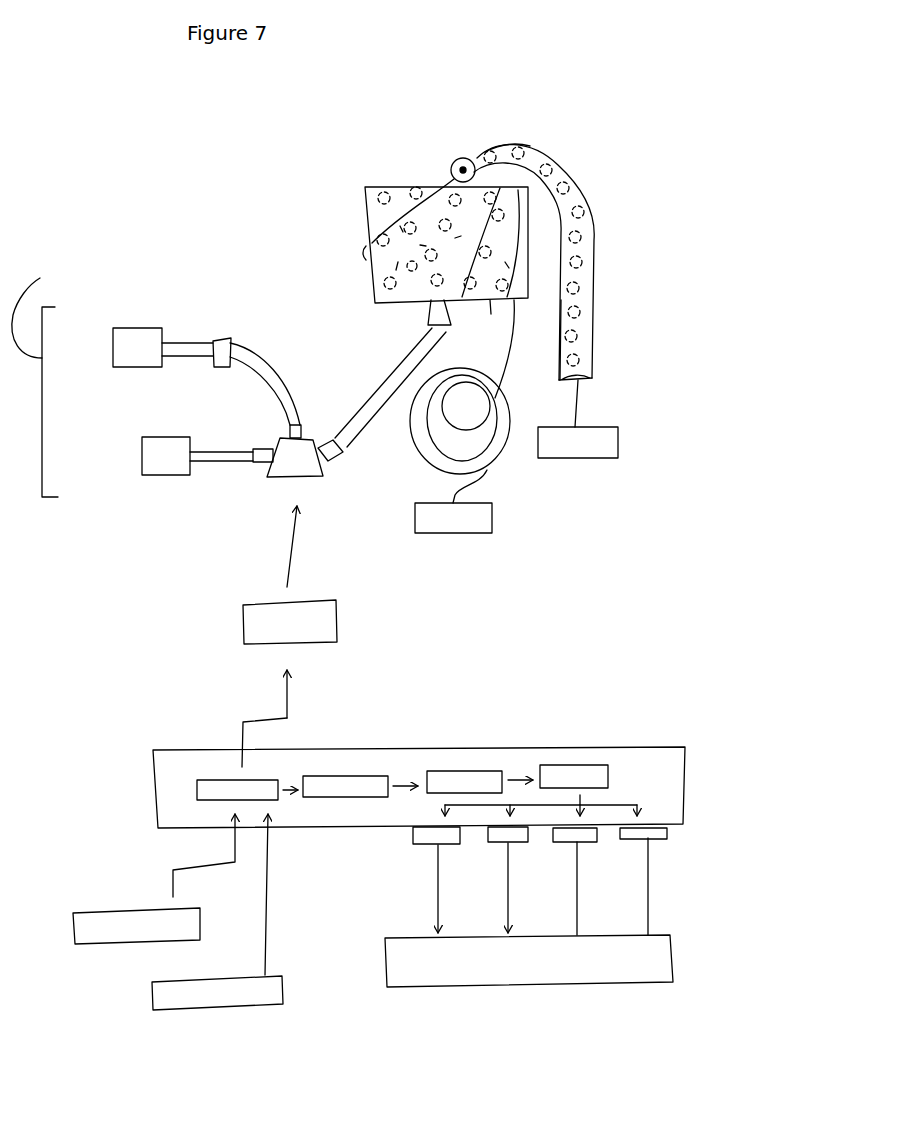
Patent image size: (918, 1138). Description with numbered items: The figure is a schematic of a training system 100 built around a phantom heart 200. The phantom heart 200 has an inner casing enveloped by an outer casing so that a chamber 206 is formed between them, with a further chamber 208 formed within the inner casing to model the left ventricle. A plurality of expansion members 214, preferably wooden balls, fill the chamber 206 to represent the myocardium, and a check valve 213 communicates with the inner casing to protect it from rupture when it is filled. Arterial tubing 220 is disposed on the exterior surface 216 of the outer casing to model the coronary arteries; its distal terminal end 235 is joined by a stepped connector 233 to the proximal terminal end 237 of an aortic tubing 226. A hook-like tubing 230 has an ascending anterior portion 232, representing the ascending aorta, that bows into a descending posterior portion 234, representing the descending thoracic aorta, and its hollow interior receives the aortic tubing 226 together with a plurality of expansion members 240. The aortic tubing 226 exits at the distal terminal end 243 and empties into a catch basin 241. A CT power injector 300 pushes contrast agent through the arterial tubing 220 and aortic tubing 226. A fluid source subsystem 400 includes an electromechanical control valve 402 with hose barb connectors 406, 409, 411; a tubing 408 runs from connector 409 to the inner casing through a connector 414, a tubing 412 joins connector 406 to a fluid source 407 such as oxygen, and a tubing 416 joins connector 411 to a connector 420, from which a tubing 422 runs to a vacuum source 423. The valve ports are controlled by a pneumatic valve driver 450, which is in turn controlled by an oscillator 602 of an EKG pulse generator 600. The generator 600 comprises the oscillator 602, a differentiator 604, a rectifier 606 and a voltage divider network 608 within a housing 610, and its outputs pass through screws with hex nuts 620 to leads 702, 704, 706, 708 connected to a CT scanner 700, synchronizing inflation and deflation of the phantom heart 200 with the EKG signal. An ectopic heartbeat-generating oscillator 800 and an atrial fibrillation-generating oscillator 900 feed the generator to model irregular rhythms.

The training system 100 is at (702, 116).
The phantom heart 200 is at (305, 172).
The chamber 206 is at (393, 187).
The chamber 208 is at (487, 237).
The check valve 213 is at (493, 307).
The expansion members 214 is at (372, 197).
The exterior surface 216 is at (367, 297).
The arterial tubing 220 is at (499, 468).
The aortic tubing 226 is at (588, 403).
The tubing 230 is at (583, 177).
The ascending anterior portion 232 is at (522, 140).
The stepped connector 233 is at (462, 163).
The descending posterior portion 234 is at (596, 302).
The distal terminal end 235 is at (454, 178).
The proximal terminal end 237 is at (514, 141).
The expansion members 240 is at (583, 257).
The catch basin 241 is at (628, 445).
The distal terminal end 243 is at (580, 377).
The CT power injector 300 is at (459, 546).
The fluid source subsystem 400 is at (46, 375).
The electromechanical control valve 402 is at (322, 486).
The hose barb connector 406 is at (267, 462).
The fluid source 407 is at (160, 467).
The tubing 408 is at (372, 430).
The hose barb connector 409 is at (330, 447).
The hose barb connector 411 is at (290, 432).
The tubing 412 is at (220, 460).
The connector 414 is at (427, 328).
The tubing 416 is at (273, 382).
The connector 420 is at (223, 340).
The tubing 422 is at (185, 348).
The vacuum source 423 is at (135, 337).
The pneumatic valve driver 450 is at (345, 621).
The EKG pulse generator 600 is at (581, 723).
The oscillator 602 is at (268, 769).
The differentiator 604 is at (368, 768).
The rectifier 606 is at (469, 765).
The voltage divider network 608 is at (594, 760).
The housing 610 is at (687, 778).
The machine screws with hex nuts 620 is at (427, 837).
The CT scanner 700 is at (608, 1003).
The lead 702 is at (437, 890).
The lead 704 is at (507, 877).
The lead 706 is at (575, 883).
The lead 708 is at (650, 880).
The ectopic heartbeat-generating oscillator 800 is at (100, 952).
The atrial fibrillation-generating oscillator 900 is at (222, 1017).